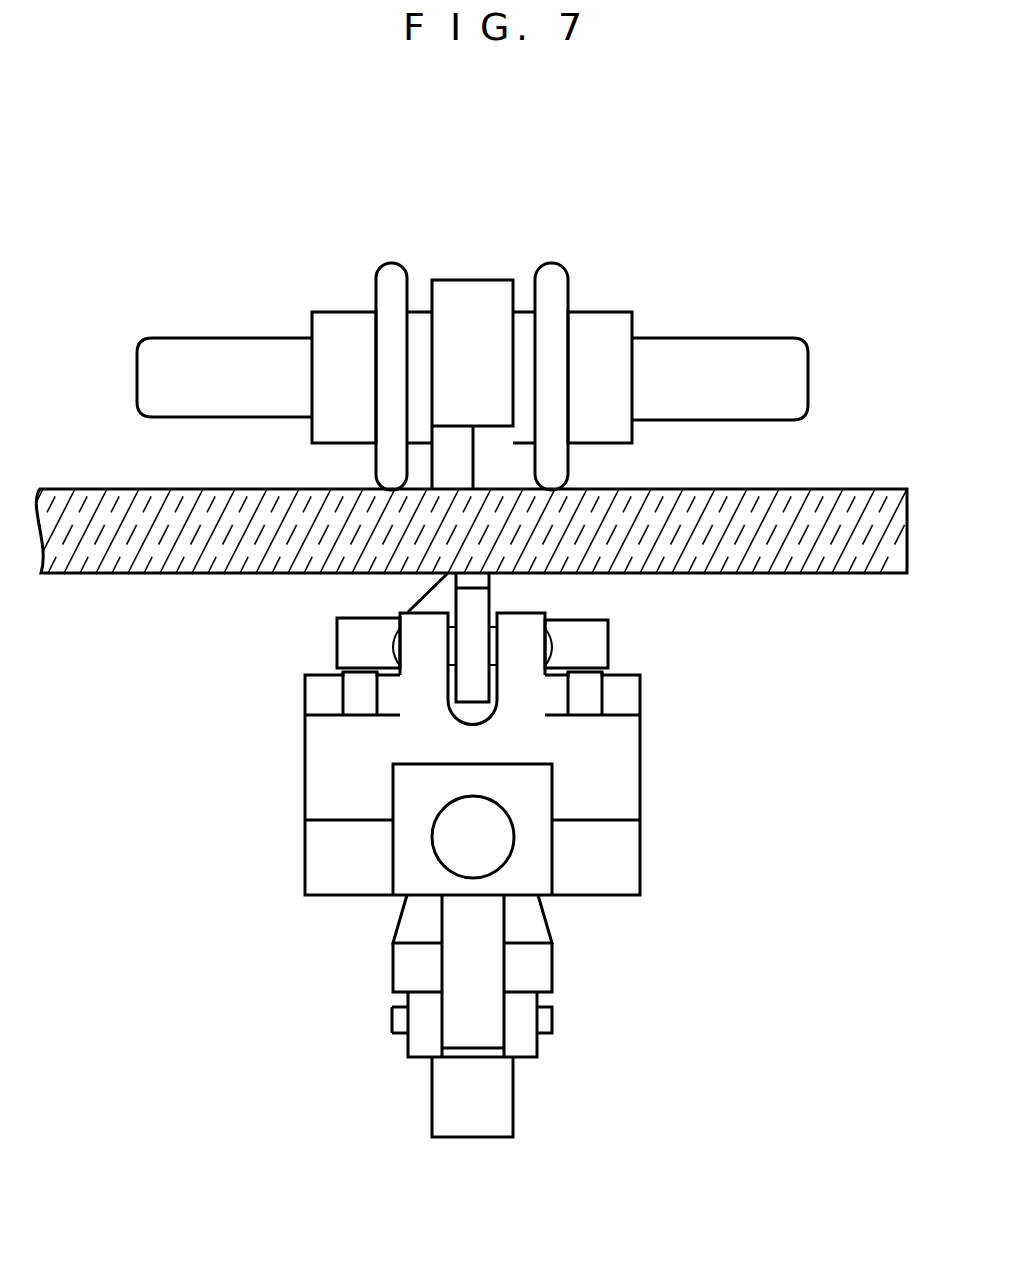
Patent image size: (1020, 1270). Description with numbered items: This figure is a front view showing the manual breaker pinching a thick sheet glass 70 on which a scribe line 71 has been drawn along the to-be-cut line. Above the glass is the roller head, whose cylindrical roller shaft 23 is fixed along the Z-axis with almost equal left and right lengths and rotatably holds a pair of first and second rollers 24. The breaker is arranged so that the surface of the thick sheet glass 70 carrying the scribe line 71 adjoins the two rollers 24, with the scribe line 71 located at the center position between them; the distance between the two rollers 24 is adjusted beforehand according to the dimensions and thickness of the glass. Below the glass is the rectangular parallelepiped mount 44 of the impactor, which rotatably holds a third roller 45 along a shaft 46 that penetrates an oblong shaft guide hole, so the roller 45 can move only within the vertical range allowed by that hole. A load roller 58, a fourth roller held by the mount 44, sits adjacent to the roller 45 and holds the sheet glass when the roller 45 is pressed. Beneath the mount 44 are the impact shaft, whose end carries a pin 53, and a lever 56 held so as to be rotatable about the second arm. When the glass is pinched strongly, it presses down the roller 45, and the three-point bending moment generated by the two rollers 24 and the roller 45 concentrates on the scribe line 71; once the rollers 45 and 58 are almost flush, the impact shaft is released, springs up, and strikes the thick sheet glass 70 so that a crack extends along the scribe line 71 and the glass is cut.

The roller shaft 23 is at (790, 380).
The first and second rollers 24 is at (553, 272).
The scribe line 71 is at (480, 498).
The thick sheet glass 70 is at (790, 567).
The third roller 45 is at (482, 580).
The load roller 58 is at (472, 605).
The shaft 46 is at (600, 645).
The mount 44 is at (640, 790).
The pin 53 is at (538, 1000).
The lever 56 is at (503, 1112).